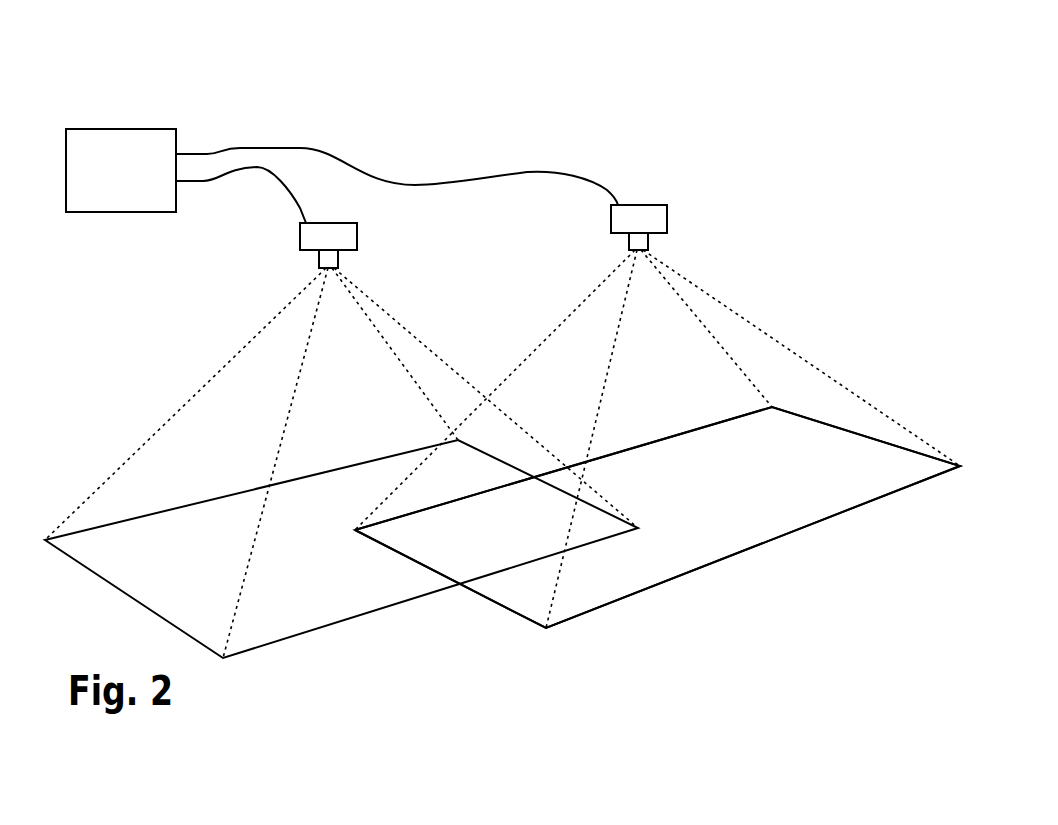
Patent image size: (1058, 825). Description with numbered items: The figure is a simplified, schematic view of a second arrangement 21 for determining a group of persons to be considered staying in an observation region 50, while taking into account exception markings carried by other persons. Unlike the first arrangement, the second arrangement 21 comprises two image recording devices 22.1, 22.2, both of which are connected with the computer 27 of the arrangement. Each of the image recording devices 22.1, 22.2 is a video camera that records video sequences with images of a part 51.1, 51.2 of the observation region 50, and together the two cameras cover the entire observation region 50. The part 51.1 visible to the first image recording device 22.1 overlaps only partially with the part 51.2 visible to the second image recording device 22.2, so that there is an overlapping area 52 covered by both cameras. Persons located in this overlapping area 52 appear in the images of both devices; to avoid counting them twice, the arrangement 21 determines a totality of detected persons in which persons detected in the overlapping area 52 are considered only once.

The second arrangement 21 is at (460, 128).
The computer 27 is at (105, 198).
The first image recording device 22.1 is at (310, 236).
The second image recording device 22.2 is at (650, 215).
The observation region 50 is at (838, 485).
The part of the observation region 51.1 is at (307, 608).
The part of the observation region 51.2 is at (693, 553).
The overlapping area 52 is at (455, 558).